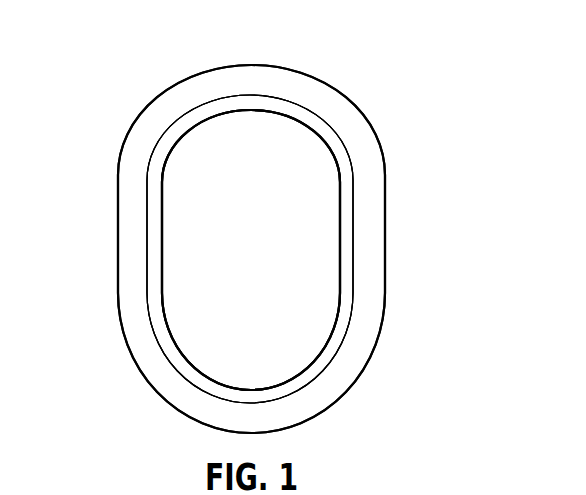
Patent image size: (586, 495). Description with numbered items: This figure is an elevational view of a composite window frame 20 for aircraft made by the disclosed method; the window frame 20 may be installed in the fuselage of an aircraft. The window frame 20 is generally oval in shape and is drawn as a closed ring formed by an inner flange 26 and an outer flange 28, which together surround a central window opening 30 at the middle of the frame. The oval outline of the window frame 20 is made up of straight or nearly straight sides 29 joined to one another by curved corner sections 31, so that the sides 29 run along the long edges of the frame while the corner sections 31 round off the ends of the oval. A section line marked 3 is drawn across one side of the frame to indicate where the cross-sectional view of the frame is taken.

The window frame 20 is at (403, 115).
The inner flange 26 is at (157, 272).
The outer flange 28 is at (360, 328).
The sides 29 is at (328, 189).
The central window opening 30 is at (195, 208).
The curved corner sections 31 is at (200, 141).
The section line 3- 3 is at (338, 265).